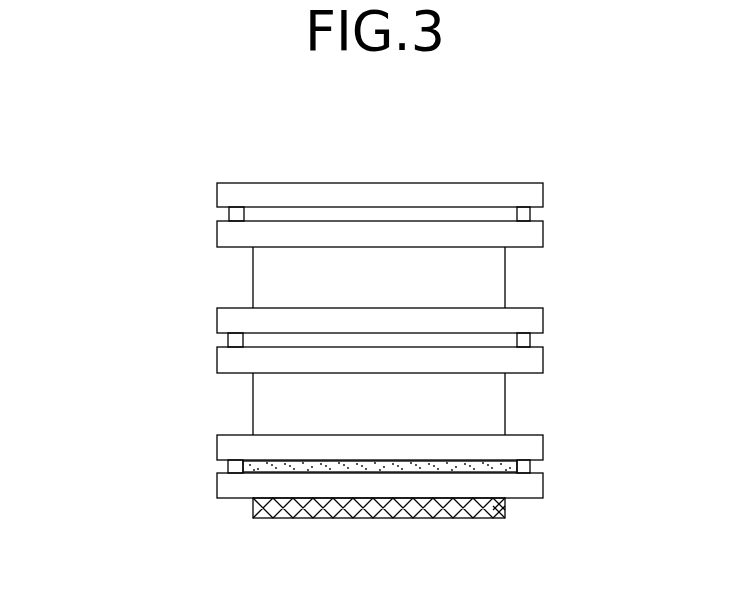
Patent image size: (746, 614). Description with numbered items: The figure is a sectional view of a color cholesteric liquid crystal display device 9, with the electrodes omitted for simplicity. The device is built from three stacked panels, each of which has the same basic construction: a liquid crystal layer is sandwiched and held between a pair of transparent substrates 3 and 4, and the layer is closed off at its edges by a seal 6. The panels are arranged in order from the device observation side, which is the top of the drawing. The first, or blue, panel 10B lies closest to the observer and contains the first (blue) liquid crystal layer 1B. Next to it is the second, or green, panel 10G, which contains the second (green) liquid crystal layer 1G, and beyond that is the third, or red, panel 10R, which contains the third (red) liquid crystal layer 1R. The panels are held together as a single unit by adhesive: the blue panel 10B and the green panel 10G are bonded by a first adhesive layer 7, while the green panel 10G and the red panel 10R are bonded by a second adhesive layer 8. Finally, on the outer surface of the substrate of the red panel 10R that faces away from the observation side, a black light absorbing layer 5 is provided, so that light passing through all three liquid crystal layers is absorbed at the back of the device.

The liquid crystal display device 9 is at (127, 147).
The first (blue) panel 10B is at (582, 185).
The second (green) panel 10G is at (580, 309).
The third (red) panel 10R is at (580, 435).
The first (blue) liquid crystal layer 1B is at (319, 209).
The second (green) liquid crystal layer 1G is at (270, 342).
The third (red) liquid crystal layer 1R is at (264, 467).
The transparent substrate 3 is at (222, 195).
The transparent substrate 4 is at (222, 231).
The black light absorbing layer 5 is at (345, 518).
The seal 6 is at (228, 214).
The first adhesive layer 7 is at (497, 278).
The second adhesive layer 8 is at (495, 405).